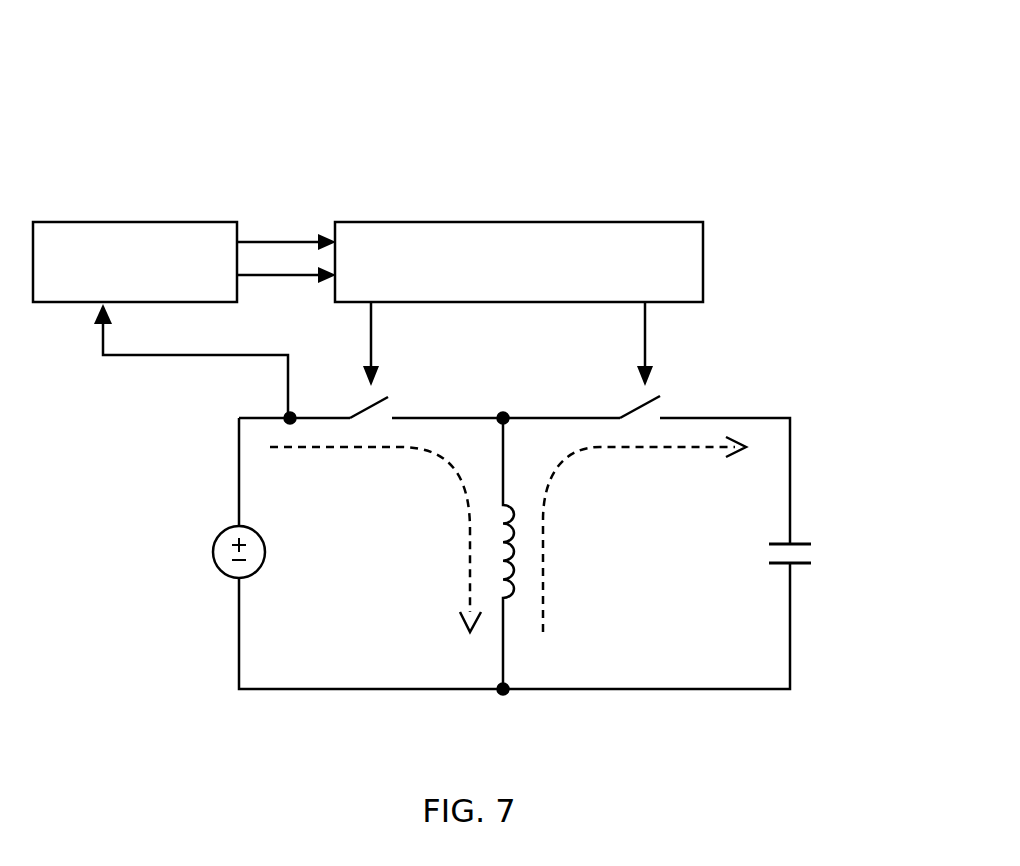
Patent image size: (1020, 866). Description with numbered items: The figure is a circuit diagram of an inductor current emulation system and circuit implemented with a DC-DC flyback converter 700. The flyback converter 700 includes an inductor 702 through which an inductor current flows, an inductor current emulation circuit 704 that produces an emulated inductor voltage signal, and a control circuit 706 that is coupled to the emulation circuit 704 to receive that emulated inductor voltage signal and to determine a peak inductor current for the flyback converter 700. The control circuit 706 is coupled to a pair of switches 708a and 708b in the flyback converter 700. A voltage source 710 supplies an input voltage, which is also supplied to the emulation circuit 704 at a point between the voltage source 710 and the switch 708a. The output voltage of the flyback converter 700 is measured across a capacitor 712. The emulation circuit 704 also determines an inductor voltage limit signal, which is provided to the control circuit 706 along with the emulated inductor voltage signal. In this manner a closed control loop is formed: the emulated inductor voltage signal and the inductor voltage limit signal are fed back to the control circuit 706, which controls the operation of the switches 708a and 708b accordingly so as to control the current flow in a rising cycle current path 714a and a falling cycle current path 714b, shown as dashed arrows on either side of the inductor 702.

The flyback converter 700 is at (812, 53).
The inductor 702 is at (506, 533).
The inductor current emulation circuit 704 is at (184, 320).
The control circuit 706 is at (519, 304).
The switch 708a is at (383, 398).
The switch 708b is at (637, 404).
The voltage source 710 is at (230, 524).
The capacitor 712 is at (802, 541).
The rising cycle current path 714a is at (362, 450).
The falling cycle current path 714b is at (604, 452).